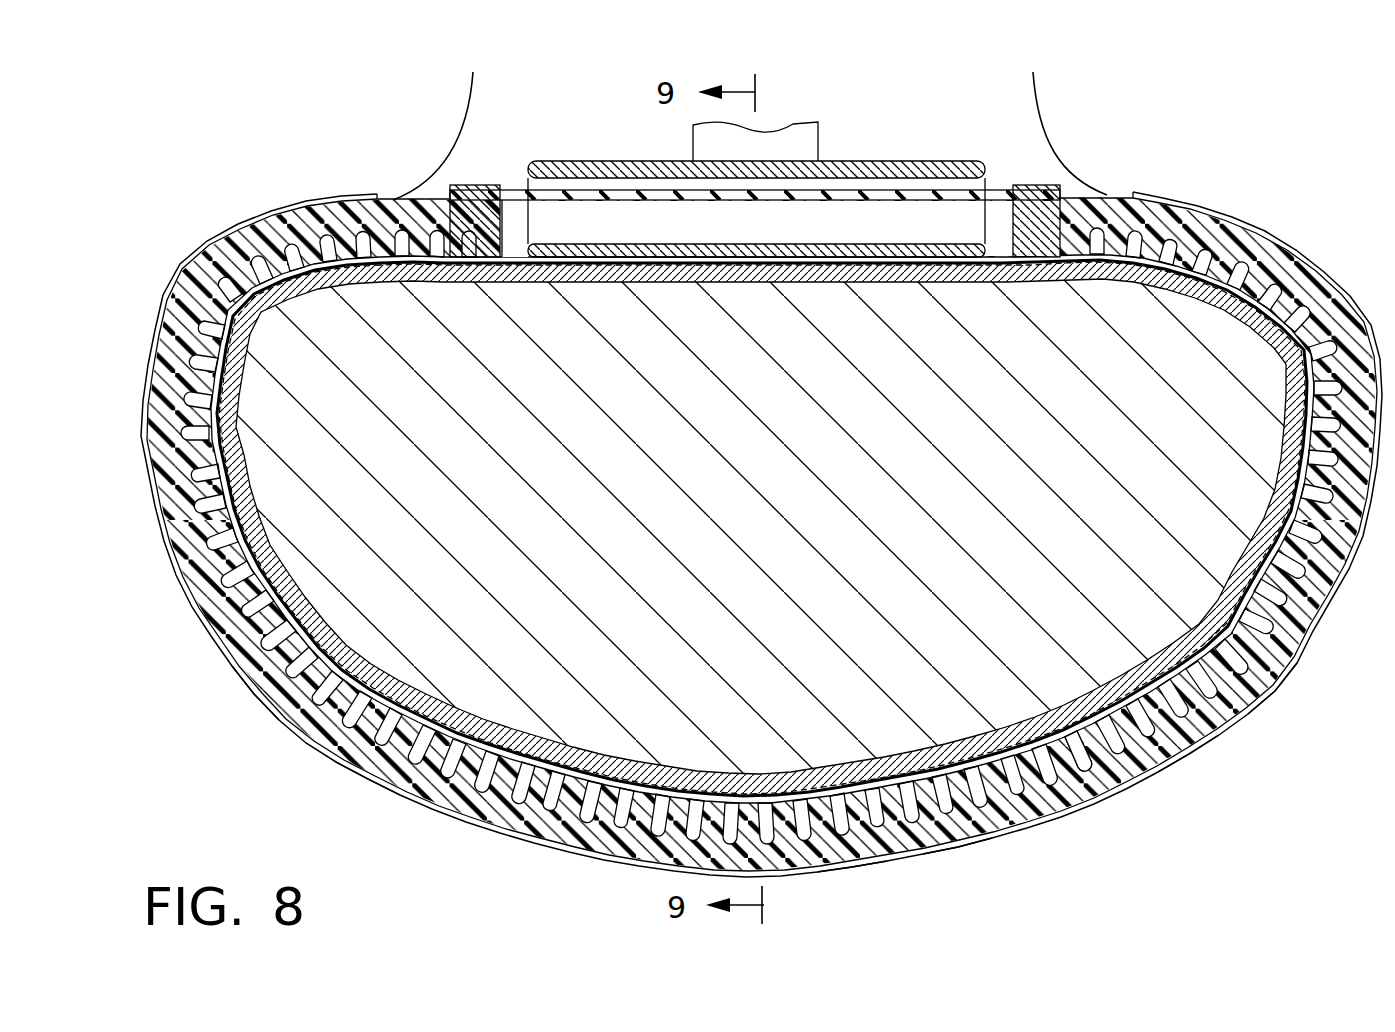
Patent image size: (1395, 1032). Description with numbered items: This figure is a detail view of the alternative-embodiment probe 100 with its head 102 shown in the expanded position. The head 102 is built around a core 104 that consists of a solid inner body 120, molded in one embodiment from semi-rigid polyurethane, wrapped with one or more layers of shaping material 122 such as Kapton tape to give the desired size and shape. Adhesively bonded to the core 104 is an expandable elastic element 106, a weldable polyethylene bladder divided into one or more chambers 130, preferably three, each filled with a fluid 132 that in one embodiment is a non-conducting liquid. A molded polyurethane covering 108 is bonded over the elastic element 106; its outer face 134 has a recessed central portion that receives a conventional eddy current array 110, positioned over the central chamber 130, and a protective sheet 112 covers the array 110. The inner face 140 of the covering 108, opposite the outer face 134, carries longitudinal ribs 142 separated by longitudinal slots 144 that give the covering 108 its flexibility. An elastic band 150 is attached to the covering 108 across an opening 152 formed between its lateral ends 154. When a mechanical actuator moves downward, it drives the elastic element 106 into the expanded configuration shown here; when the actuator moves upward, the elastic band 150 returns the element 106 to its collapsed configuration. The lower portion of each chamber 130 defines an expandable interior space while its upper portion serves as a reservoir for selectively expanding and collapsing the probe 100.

The probe 100 is at (1262, 78).
The head 102 is at (278, 806).
The core 104 is at (1257, 690).
The expandable elastic element 106 is at (397, 781).
The covering 108 is at (958, 864).
The eddy current array 110 is at (1097, 190).
The protective sheet 112 is at (1286, 236).
The inner body 120 is at (790, 503).
The shaping material 122 is at (242, 675).
The chambers 130 is at (480, 732).
The fluid 132 is at (860, 866).
The outer face 134 is at (1190, 766).
The inner face 140 is at (1137, 678).
The longitudinal ribs 142 is at (997, 800).
The longitudinal slots 144 is at (1075, 785).
The elastic band 150 is at (458, 186).
The opening 152 is at (993, 207).
The lateral ends 154 is at (515, 210).